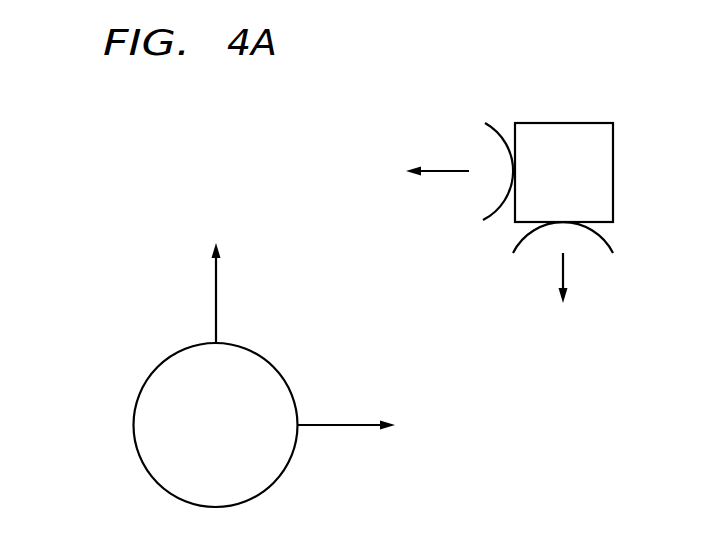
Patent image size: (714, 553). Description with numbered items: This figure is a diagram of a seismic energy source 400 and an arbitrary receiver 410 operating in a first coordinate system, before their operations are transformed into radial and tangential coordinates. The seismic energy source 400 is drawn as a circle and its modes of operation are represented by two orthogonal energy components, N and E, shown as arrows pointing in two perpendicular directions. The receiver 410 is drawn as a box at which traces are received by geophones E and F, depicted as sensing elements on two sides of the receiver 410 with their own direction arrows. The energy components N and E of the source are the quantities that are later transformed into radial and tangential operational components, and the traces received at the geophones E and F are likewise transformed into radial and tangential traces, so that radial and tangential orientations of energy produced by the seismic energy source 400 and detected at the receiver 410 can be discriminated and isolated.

The seismic energy source 400 is at (133, 425).
The receiver 410 is at (588, 122).
The energy component N is at (227, 293).
The energy component E / geophone E is at (512, 74).
The geophone F is at (612, 240).